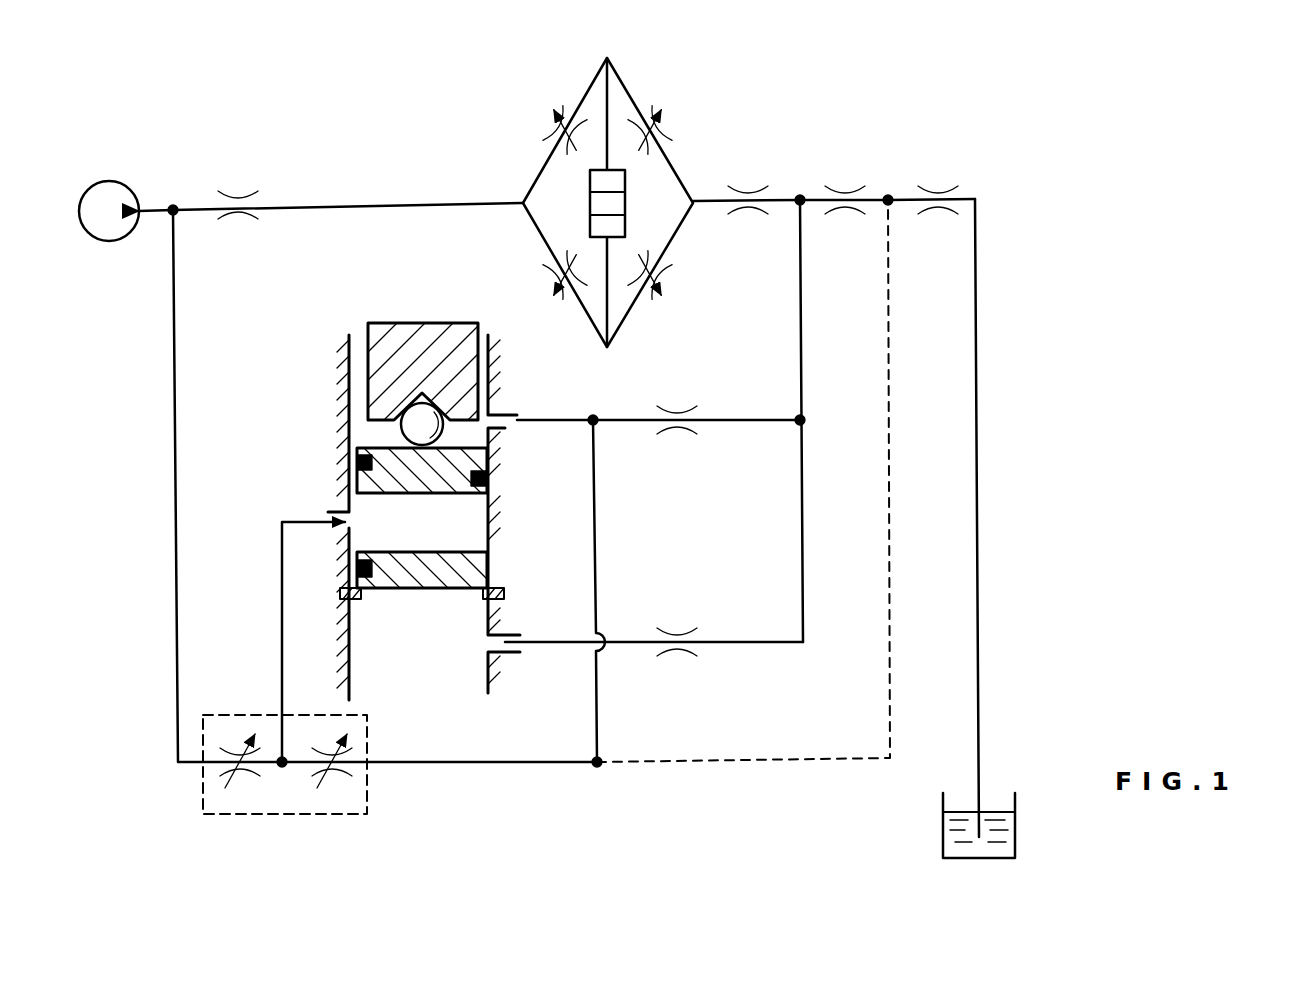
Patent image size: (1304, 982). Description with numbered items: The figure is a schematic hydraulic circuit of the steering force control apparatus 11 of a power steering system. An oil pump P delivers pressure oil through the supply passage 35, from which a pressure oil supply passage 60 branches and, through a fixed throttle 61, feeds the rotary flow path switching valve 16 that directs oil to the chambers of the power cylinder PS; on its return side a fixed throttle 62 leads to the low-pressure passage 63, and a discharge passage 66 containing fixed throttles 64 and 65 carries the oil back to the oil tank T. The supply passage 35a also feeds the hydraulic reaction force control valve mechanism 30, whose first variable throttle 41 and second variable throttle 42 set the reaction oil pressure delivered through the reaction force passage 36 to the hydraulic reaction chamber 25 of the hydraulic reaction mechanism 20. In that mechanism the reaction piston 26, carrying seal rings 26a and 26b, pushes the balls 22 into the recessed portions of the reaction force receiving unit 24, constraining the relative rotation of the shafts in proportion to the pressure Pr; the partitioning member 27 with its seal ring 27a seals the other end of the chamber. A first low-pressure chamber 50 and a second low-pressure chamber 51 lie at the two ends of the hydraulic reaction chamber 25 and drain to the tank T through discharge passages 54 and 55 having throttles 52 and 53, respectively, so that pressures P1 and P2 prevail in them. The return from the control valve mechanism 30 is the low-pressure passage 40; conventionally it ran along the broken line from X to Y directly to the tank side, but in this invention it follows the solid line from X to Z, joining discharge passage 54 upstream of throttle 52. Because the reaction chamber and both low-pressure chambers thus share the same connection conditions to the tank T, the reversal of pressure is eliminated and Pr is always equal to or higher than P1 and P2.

The steering force control apparatus 11 is at (302, 795).
The rotary flow path switching valve 16 is at (666, 98).
The hydraulic reaction mechanism 20 is at (324, 436).
The balls 22 is at (409, 412).
The reaction force receiving unit 24 is at (415, 335).
The hydraulic reaction chamber 25 is at (457, 527).
The reaction piston 26 is at (383, 473).
The seal ring 26a is at (357, 462).
The seal ring 26b is at (488, 478).
The partitioning member 27 is at (470, 575).
The seal ring 27a is at (357, 568).
The hydraulic reaction force control valve mechanism 30 is at (203, 796).
The supply passage 35 is at (156, 213).
The supply passage 35a is at (176, 487).
The reaction force passage 36 is at (282, 665).
The low-pressure passage 40 is at (597, 545).
The first variable throttle 41 is at (240, 775).
The second variable throttle 42 is at (325, 775).
The first low-pressure chamber 50 is at (490, 437).
The second low-pressure chamber 51 is at (450, 673).
The throttle 52 is at (677, 436).
The throttle 53 is at (677, 626).
The discharge passage 54 is at (745, 418).
The discharge passage 55 is at (745, 645).
The pressure oil supply passage 60 is at (380, 204).
The fixed throttle 61 is at (238, 190).
The fixed throttle 62 is at (748, 188).
The low-pressure passage 63 is at (800, 198).
The fixed throttle 64 is at (845, 188).
The fixed throttle 65 is at (938, 188).
The discharge passage 66 is at (982, 455).
The oil pump P is at (109, 181).
The oil tank T is at (943, 837).
The power cylinder PS is at (590, 206).
The point X is at (739, 500).
The point Y is at (887, 186).
The point Z is at (592, 406).
The pressure in the hydraulic reaction chamber Pr is at (257, 618).
The pressure in the first low-pressure chamber P1 is at (554, 407).
The pressure in the second low-pressure chamber P2 is at (561, 629).